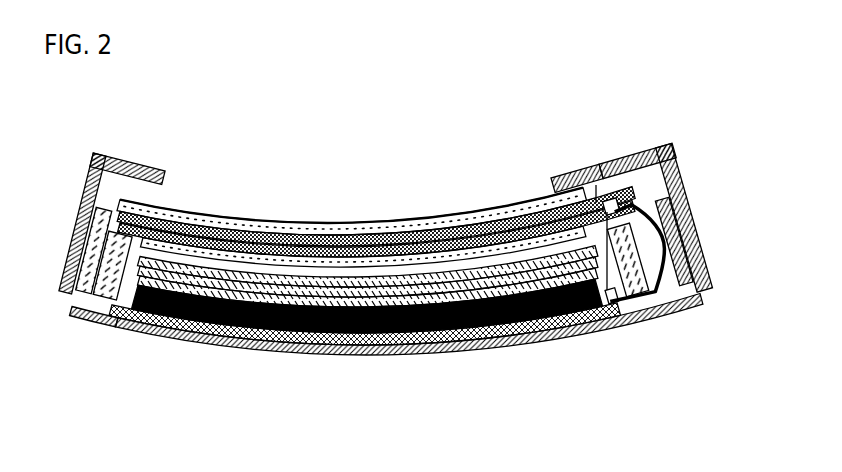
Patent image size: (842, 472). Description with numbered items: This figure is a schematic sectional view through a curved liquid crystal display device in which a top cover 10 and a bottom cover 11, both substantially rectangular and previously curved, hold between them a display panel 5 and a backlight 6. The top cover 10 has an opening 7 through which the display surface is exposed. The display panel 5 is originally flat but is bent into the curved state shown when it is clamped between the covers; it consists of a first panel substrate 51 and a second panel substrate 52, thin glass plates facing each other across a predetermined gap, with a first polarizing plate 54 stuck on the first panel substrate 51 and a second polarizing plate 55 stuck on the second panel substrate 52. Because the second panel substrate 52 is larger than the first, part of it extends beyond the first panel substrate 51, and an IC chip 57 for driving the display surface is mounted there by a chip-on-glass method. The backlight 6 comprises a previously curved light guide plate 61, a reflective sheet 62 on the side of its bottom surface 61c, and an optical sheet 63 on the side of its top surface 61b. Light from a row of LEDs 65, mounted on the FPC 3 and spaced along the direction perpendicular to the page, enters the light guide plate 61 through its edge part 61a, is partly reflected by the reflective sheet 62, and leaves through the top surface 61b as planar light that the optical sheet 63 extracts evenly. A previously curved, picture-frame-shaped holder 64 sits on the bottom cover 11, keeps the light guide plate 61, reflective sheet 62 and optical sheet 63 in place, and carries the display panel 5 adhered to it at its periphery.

The FPC 3 is at (678, 158).
The display panel 5 is at (376, 184).
The backlight 6 is at (379, 350).
The opening 7 is at (184, 188).
The top cover 10 is at (653, 143).
The bottom cover 11 is at (95, 323).
The first panel substrate 51 is at (353, 237).
The second panel substrate 52 is at (88, 203).
The first polarizing plate 54 is at (307, 223).
The second polarizing plate 55 is at (641, 219).
The IC chip 57 is at (594, 176).
The light guide plate 61 is at (353, 358).
The edge part 61a is at (590, 333).
The top surface 61b is at (703, 244).
The bottom surface 61c is at (427, 357).
The reflective sheet 62 is at (285, 353).
The optical sheet 63 is at (108, 242).
The holder 64 is at (92, 272).
The LED 65 is at (612, 306).